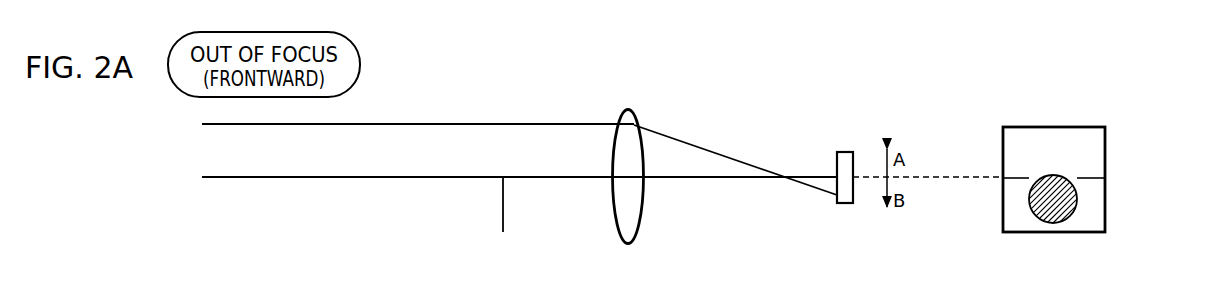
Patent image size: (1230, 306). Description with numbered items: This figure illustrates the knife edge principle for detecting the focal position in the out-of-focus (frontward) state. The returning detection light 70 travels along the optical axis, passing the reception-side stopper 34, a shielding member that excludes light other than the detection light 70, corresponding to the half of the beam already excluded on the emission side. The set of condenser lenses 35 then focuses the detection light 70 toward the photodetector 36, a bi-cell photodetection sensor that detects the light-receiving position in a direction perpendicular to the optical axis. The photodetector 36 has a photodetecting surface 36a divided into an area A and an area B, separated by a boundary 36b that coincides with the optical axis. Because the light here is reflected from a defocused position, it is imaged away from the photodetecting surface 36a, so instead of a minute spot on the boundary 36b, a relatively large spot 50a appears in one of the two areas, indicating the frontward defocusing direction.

The detection light 70 is at (449, 121).
The reception-side stopper 34 is at (503, 217).
The set of condenser lenses 35 is at (640, 225).
The photodetector 36 is at (856, 134).
The photodetecting surface 36a is at (1117, 149).
The boundary 36b is at (1090, 180).
The spot 50a is at (1070, 222).